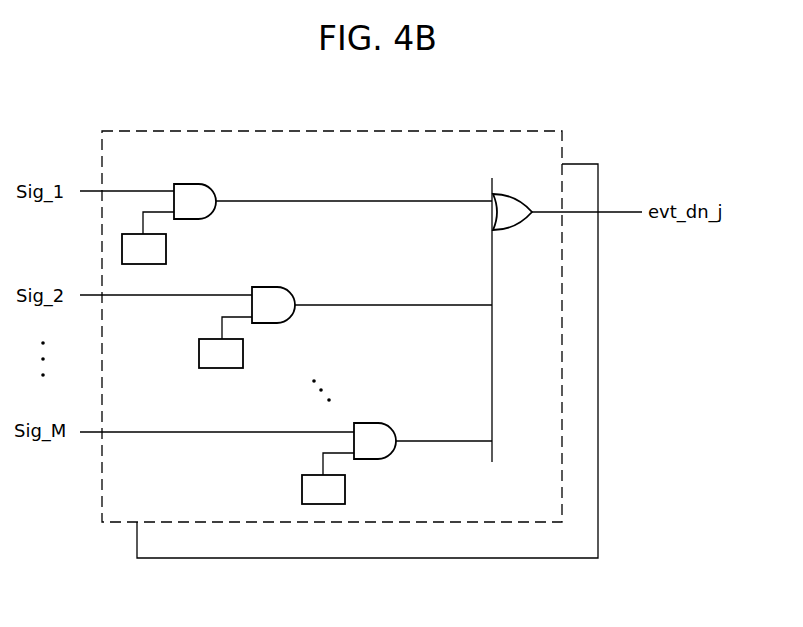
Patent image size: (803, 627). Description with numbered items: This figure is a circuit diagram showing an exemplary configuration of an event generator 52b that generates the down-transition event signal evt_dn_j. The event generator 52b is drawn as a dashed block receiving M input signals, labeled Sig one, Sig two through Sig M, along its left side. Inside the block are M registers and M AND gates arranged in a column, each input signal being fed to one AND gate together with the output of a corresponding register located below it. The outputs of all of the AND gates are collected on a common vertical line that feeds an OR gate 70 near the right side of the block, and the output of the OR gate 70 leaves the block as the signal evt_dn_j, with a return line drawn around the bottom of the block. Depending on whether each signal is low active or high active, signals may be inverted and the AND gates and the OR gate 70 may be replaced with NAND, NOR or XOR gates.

The event generator 52b is at (357, 131).
The OR gate 70 is at (505, 194).